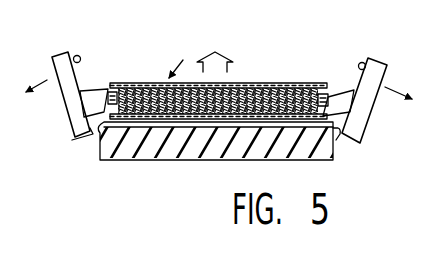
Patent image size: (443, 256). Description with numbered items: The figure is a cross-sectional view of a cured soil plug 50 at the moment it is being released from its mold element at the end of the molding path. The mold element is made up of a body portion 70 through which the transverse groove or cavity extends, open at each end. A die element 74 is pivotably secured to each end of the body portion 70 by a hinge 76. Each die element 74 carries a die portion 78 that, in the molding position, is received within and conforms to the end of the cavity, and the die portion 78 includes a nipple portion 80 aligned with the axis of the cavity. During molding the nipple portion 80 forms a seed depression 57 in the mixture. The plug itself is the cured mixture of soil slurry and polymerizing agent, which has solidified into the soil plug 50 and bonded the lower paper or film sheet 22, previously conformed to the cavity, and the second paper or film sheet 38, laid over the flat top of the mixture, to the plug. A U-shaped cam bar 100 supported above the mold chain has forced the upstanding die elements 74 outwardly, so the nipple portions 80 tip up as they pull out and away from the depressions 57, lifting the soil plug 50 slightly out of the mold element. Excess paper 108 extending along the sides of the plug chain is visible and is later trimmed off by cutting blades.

The paper or film sheet 22 is at (166, 115).
The second sheet of paper or film 38 is at (250, 85).
The soil plug 50 is at (186, 60).
The seed depression 57 is at (161, 83).
The body portion 70 is at (197, 157).
The die element 74 is at (66, 108).
The hinge 76 is at (100, 128).
The die portion 78 is at (88, 100).
The nipple portion 80 is at (117, 90).
The cam bar 100 is at (79, 56).
The excess paper 108 is at (110, 83).